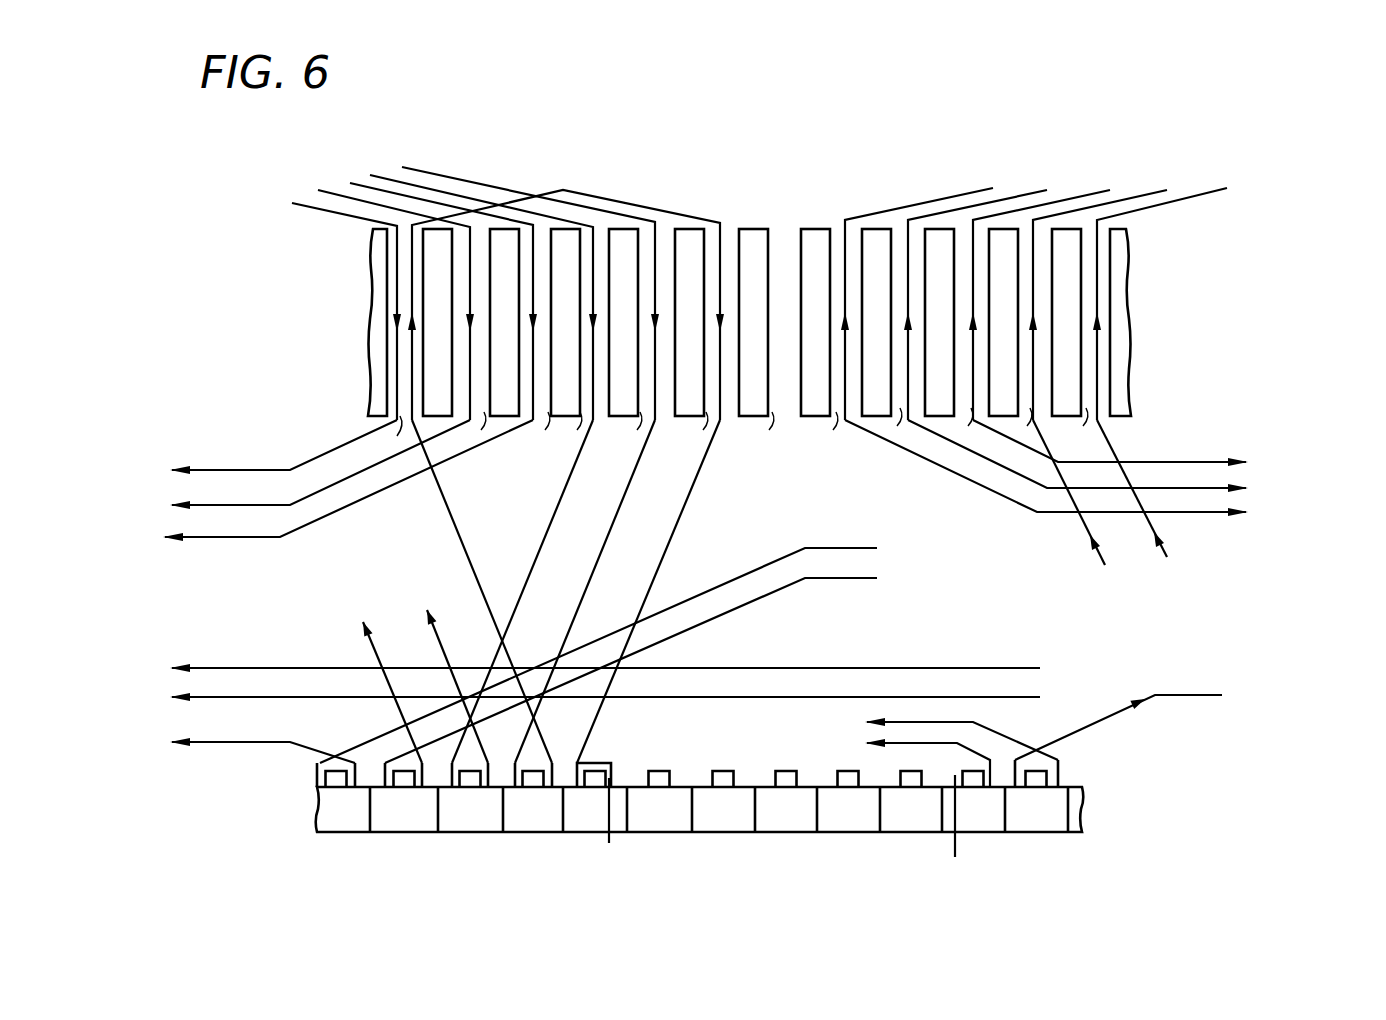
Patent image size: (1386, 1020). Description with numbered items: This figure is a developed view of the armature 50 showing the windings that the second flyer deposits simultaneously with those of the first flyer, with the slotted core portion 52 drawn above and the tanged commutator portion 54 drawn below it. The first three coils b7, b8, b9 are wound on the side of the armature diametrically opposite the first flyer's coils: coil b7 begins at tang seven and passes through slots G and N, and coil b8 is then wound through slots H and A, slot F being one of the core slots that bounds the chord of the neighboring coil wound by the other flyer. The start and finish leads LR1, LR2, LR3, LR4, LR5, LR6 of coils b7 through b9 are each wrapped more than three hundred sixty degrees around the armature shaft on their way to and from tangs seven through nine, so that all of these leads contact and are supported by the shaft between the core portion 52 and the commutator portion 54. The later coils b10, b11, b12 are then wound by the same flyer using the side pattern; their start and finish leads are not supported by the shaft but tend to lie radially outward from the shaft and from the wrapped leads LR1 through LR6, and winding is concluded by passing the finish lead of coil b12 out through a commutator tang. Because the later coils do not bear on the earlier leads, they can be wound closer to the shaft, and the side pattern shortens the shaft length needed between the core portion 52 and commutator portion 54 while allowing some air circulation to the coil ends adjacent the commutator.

The armature 50 is at (1368, 616).
The core portion 52 is at (1182, 340).
The commutator portion 54 is at (1168, 809).
The coil b7 is at (293, 204).
The coil b8 is at (327, 194).
The coil b9 is at (353, 182).
The coil b10 is at (385, 175).
The coil b11 is at (428, 167).
The coil b12 is at (592, 193).
The lead LR1 is at (1157, 495).
The lead LR2 is at (1157, 468).
The lead LR3 is at (1155, 457).
The lead LR4 is at (250, 540).
The lead LR5 is at (254, 502).
The lead LR6 is at (254, 468).
The slot F is at (609, 833).
The brush S is at (955, 832).